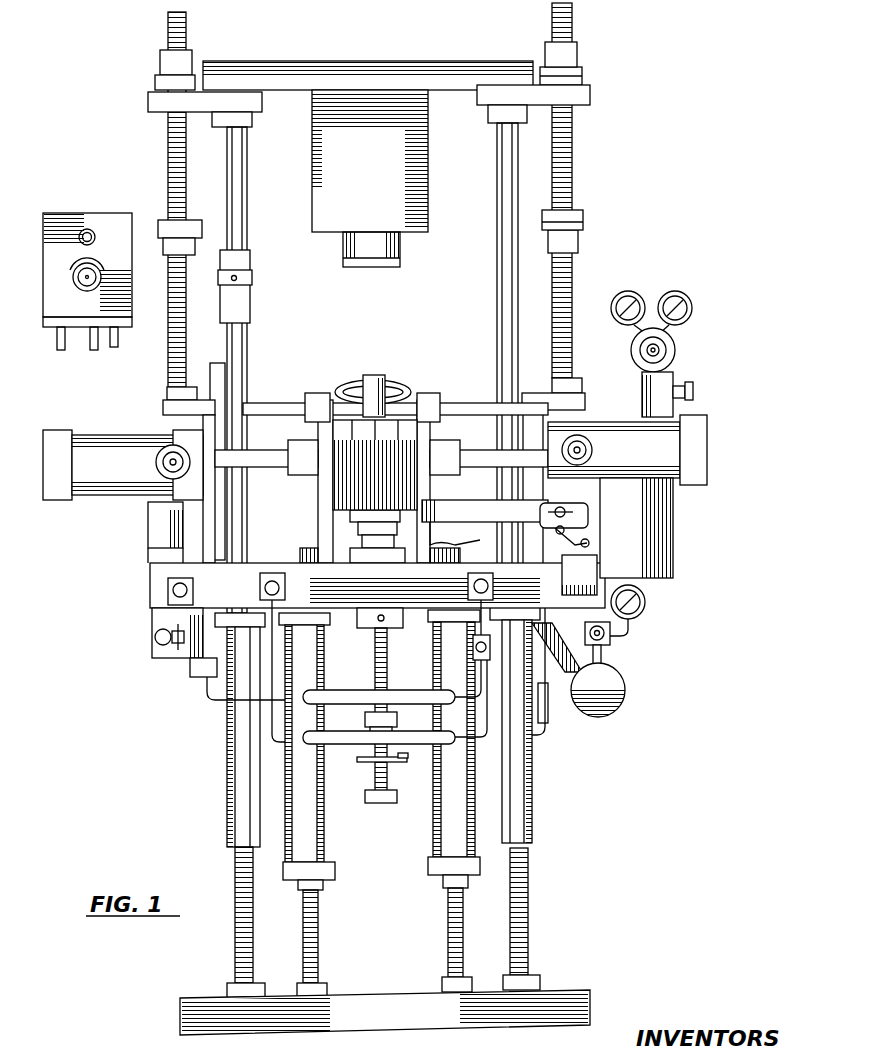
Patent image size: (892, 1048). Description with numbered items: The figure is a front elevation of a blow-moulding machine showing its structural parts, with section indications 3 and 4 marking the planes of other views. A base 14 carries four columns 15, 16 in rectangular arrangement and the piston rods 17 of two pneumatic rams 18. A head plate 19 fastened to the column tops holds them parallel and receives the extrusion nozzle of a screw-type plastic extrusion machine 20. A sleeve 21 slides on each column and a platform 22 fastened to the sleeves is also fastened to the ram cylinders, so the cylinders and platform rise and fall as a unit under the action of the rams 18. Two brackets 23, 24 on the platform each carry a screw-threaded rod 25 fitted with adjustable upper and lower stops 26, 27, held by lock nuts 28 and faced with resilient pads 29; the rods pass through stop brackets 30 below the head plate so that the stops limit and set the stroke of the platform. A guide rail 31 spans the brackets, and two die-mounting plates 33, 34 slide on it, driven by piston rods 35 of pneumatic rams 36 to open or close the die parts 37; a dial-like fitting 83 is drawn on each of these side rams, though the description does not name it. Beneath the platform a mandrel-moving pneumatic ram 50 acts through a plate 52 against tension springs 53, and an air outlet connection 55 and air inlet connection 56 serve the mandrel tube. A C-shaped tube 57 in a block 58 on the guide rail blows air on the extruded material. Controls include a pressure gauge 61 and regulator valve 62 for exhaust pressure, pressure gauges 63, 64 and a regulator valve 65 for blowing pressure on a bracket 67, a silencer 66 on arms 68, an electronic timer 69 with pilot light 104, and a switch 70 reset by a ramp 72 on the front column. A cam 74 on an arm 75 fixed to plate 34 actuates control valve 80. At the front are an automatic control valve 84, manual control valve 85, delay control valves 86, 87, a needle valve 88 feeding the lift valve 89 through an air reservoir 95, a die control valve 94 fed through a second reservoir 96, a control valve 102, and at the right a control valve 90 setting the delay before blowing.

The section line 3- 3 is at (86, 583).
The section line 4- 4 is at (386, 333).
The base 14 is at (565, 990).
The column 15 is at (240, 940).
The column 16 is at (520, 940).
The piston rod 17 is at (305, 915).
The pneumatic ram 18 is at (300, 872).
The head plate 19 is at (355, 68).
The screw-type plastic extrusion machine 20 is at (370, 178).
The sleeve 21 is at (235, 755).
The platform 22 is at (377, 587).
The bracket 23 is at (165, 405).
The bracket 24 is at (585, 395).
The screw-threaded rod 25 is at (168, 365).
The upper stop 26 is at (158, 80).
The lower stop 27 is at (168, 245).
The lock nut 28 is at (580, 50).
The resilient pad 29 is at (584, 80).
The stop bracket 30 is at (150, 100).
The guide rail 31 is at (283, 389).
The die-mounting plate 33 is at (325, 508).
The die-mounting plate 34 is at (456, 541).
The piston rod 35 is at (275, 467).
The pneumatic ram 36 is at (90, 450).
The blow-moulding die part 37 is at (385, 470).
The mandrel-moving pneumatic ram 50 is at (388, 661).
The plate 52 is at (395, 796).
The tension spring 53 is at (388, 648).
The air outlet connection 55 is at (362, 763).
The air inlet connection 56 is at (402, 760).
The C-shaped tube 57 is at (400, 383).
The block 58 is at (380, 378).
The pressure gauge 61 is at (645, 602).
The regulator valve 62 is at (610, 641).
The pressure gauge 63 is at (630, 290).
The pressure gauge 64 is at (678, 290).
The regulator valve 65 is at (665, 350).
The silencer 66 is at (625, 681).
The bracket 67 is at (673, 523).
The arm 68 is at (612, 706).
The electronic timer 69 is at (55, 225).
The switch 70 is at (215, 365).
The ramp 72 is at (250, 318).
The valve actuating cam 74 is at (590, 519).
The supporting arm 75 is at (468, 510).
The control valve 80 is at (579, 575).
The dial indicator 83 is at (165, 470).
The automatic control valve 84 is at (170, 592).
The manual control valve 85 is at (155, 641).
The control valve 86 is at (278, 588).
The control valve 87 is at (475, 586).
The needle valve 88 is at (477, 686).
The valve 89 is at (190, 670).
The control valve 90 is at (690, 388).
The die control valve 94 is at (555, 682).
The air reservoir 95 is at (340, 690).
The second reservoir 96 is at (345, 746).
The control valve 102 is at (160, 520).
The pilot light 104 is at (90, 230).